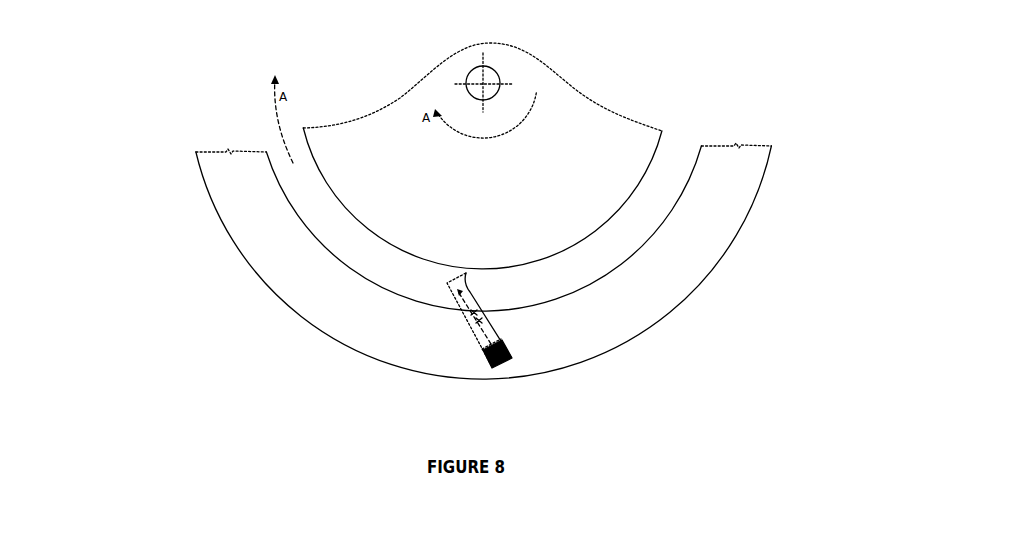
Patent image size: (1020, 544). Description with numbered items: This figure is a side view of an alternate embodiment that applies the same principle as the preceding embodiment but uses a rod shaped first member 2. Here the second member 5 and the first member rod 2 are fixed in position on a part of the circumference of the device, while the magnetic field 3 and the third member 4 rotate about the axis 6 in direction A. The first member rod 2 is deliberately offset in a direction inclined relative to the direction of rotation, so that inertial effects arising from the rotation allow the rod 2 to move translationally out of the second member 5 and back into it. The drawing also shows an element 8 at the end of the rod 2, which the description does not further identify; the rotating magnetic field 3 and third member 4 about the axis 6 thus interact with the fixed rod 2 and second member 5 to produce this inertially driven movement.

The rod shaped first member 2 is at (447, 285).
The magnetic field 3 is at (317, 200).
The third member 4 is at (303, 128).
The second member 5 is at (373, 360).
The axis 6 is at (483, 350).
The insert 8 is at (510, 362).